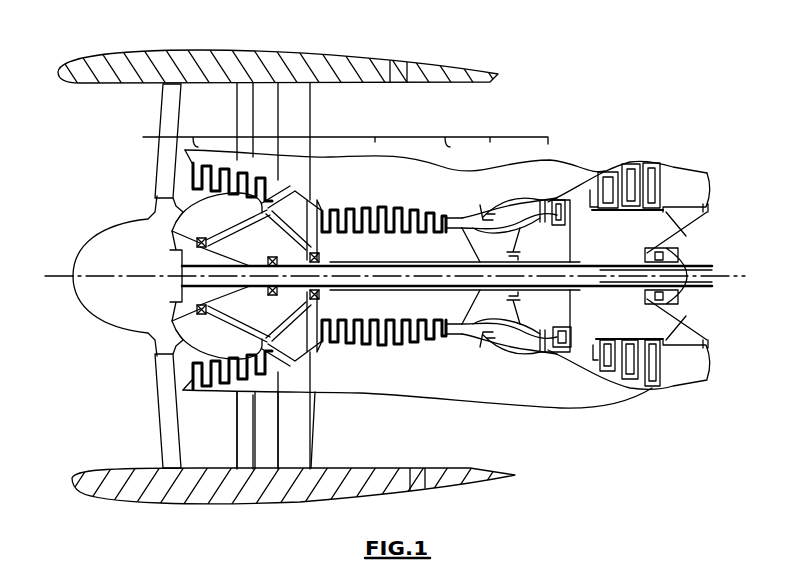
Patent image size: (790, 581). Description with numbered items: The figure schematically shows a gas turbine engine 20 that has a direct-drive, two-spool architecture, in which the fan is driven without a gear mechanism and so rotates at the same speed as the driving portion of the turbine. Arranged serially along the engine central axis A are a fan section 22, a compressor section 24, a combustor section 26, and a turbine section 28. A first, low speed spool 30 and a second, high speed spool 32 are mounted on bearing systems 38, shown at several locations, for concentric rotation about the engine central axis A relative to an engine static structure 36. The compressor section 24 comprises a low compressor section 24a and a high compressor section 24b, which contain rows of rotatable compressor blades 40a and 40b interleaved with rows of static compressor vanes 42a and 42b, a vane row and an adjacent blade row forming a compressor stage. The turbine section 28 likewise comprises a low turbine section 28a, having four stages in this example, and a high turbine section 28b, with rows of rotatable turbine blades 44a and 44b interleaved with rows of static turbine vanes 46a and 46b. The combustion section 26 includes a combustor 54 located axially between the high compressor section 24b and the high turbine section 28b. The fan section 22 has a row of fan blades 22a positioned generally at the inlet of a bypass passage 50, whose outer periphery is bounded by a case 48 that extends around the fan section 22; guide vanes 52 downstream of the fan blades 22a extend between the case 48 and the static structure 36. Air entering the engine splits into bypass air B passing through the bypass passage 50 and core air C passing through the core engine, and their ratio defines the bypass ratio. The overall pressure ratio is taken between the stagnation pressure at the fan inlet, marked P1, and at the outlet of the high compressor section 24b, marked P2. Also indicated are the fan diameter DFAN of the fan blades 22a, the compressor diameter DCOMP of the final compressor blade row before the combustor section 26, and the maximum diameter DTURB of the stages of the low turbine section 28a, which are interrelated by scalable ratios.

The gas turbine engine 20 is at (58, 392).
The fan section 22 is at (204, 125).
The fan blades 22a is at (155, 390).
The compressor section 24 is at (375, 137).
The low compressor section 24a is at (280, 165).
The high compressor section 24b is at (447, 211).
The combustor section 26 is at (490, 137).
The turbine section 28 is at (675, 122).
The low turbine section 28a is at (602, 170).
The high turbine section 28b is at (552, 190).
The first spool 30 is at (255, 264).
The second spool 32 is at (317, 300).
The engine static structure 36 is at (475, 160).
The bearing systems 38 is at (216, 306).
The compressor blades 40a is at (232, 166).
The compressor blades 40b is at (348, 212).
The compressor vanes 42a is at (257, 169).
The compressor vanes 42b is at (396, 210).
The turbine blades 44a is at (655, 188).
The turbine blades 44b is at (567, 206).
The turbine vanes 46a is at (657, 166).
The turbine vanes 46b is at (562, 198).
The case 48 is at (345, 52).
The bypass passage 50 is at (170, 28).
The guide vanes 52 is at (270, 83).
The combustor 54 is at (527, 350).
The engine central axis A is at (96, 273).
The bypass air B is at (172, 122).
The core air C is at (187, 175).
The fan section inlet stagnation pressure location P1 is at (154, 330).
The high compressor outlet stagnation pressure location P2 is at (460, 337).
The fan diameter DFAN is at (170, 472).
The compressor diameter DCOMP is at (447, 336).
The maximum diameter of the low turbine section DTURB is at (655, 392).